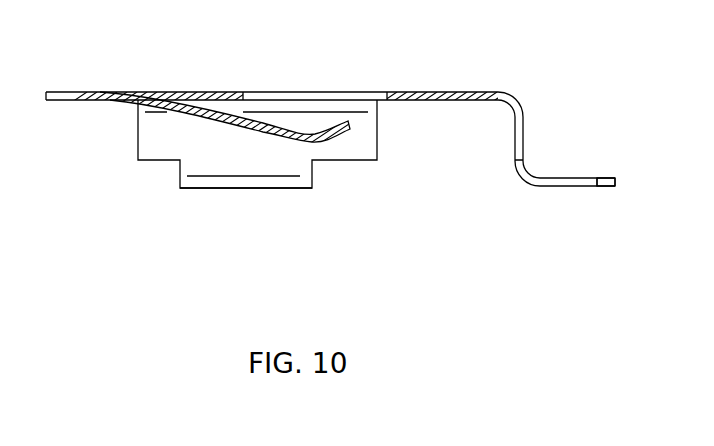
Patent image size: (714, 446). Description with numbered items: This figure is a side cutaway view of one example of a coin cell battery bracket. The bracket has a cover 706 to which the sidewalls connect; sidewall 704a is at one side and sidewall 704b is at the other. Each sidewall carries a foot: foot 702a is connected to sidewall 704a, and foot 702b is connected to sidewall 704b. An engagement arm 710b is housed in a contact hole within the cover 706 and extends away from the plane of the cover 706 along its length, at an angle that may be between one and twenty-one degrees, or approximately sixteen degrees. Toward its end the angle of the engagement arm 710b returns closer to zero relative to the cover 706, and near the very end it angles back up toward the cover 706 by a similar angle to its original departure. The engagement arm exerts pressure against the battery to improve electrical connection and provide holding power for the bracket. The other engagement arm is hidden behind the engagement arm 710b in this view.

The cover 706 is at (88, 92).
The sidewall 704a is at (138, 137).
The sidewall 704b is at (523, 130).
The foot 702a is at (192, 188).
The foot 702b is at (570, 186).
The engagement arm 710b is at (263, 132).